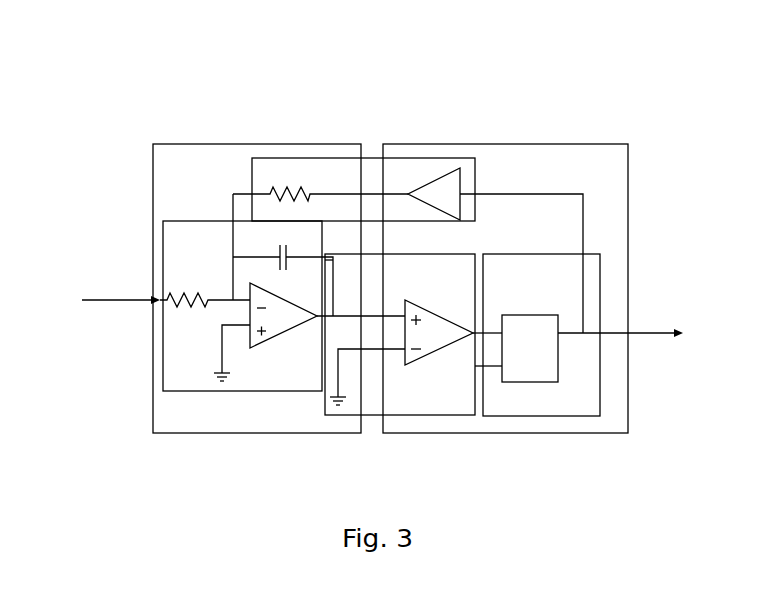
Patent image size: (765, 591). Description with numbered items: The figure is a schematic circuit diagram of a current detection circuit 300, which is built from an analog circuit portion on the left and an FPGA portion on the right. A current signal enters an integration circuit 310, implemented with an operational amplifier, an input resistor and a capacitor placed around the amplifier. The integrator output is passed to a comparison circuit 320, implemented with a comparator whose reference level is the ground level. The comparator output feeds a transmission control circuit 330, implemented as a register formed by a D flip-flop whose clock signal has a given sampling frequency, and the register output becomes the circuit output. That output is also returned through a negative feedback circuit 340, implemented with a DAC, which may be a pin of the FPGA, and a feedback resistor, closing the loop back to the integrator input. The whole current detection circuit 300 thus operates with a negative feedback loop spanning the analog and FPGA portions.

The current detection circuit 300 is at (443, 52).
The integration circuit 310 is at (177, 221).
The comparison circuit 320 is at (463, 254).
The transmission control circuit 330 is at (588, 253).
The negative feedback circuit 340 is at (413, 158).